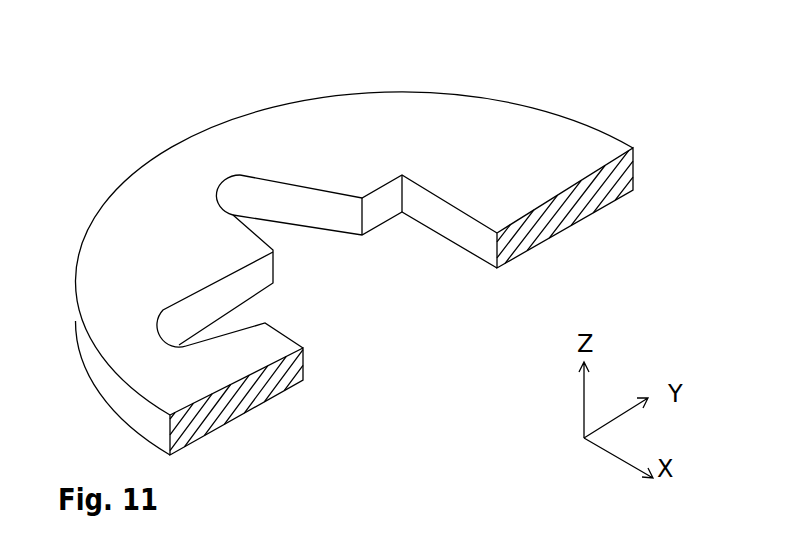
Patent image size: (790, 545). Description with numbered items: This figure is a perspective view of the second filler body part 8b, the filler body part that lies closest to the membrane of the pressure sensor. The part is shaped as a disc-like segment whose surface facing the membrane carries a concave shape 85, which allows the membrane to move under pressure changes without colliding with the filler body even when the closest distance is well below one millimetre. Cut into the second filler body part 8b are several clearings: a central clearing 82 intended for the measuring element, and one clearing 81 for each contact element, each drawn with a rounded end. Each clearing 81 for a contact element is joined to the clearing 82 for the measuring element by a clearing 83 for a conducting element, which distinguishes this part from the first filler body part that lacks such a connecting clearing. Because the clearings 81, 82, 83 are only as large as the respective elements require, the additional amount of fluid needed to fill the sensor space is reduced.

The concave shape 85 is at (327, 128).
The clearing for a contact element 81 is at (235, 201).
The clearing for a conducting element 83 is at (293, 243).
The clearing for a measuring element 82 is at (403, 295).
The second filler body part 8b is at (611, 183).